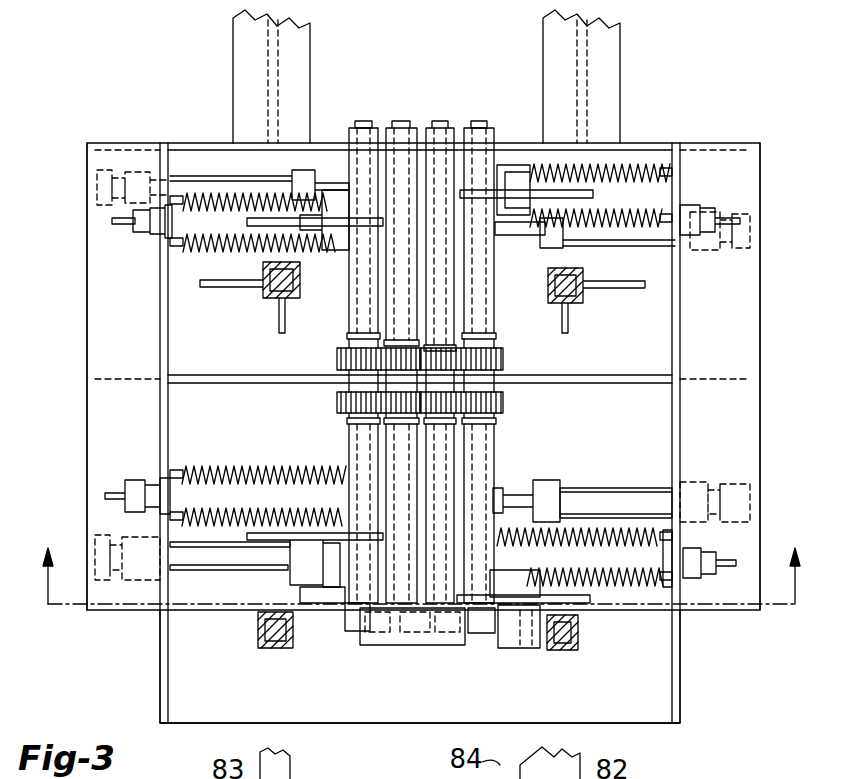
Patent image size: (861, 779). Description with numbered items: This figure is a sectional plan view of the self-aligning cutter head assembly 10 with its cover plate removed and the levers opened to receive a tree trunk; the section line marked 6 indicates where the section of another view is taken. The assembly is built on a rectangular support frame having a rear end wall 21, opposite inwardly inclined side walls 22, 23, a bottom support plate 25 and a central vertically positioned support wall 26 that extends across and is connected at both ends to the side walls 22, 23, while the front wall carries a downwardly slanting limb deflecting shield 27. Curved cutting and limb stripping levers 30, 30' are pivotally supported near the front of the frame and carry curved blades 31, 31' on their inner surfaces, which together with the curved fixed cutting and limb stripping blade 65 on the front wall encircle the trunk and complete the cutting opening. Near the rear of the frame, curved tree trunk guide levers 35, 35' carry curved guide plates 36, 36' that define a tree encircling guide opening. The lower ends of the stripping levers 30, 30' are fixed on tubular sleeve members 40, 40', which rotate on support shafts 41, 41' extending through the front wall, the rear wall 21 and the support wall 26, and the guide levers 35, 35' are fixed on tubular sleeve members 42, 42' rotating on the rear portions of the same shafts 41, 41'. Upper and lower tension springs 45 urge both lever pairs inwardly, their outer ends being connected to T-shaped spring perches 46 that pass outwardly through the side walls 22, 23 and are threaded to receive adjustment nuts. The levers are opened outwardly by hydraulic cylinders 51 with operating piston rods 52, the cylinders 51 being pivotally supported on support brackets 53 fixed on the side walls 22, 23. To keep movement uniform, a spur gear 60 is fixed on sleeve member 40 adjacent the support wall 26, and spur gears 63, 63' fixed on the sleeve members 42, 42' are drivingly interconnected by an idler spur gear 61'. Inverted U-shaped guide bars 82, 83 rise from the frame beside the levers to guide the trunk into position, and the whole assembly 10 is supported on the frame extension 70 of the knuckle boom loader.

The self-aligning cutter head assembly 10 is at (130, 628).
The rear end wall 21 is at (209, 148).
The side wall 22 is at (745, 432).
The side wall 23 is at (100, 410).
The bottom support plate 25 is at (225, 442).
The central vertically positioned support wall 26 is at (648, 376).
The limb deflecting shield 27 is at (400, 710).
The curved cutting and limb stripping lever 30 is at (548, 611).
The curved cutting and limb stripping lever 30' is at (311, 567).
The curved blade 31 is at (522, 646).
The curved blade 31' is at (320, 621).
The curved tree trunk guide lever 35 is at (553, 195).
The curved tree trunk guide lever 35' is at (286, 215).
The curved guide plate 36 is at (514, 164).
The curved guide plate 36' is at (322, 237).
The tubular sleeve member 40 is at (504, 486).
The tubular sleeve member 40' is at (339, 486).
The support shaft 41 is at (474, 381).
The support shaft 41' is at (344, 380).
The tubular sleeve member 42 is at (500, 238).
The tubular sleeve member 42' is at (339, 238).
The tension springs 45 is at (235, 254).
The T-shaped spring perches 46 is at (158, 236).
The hydraulic cylinders 51 is at (235, 190).
The operating piston rods 52 is at (510, 232).
The support brackets 53 is at (97, 185).
The spur gear 60 is at (503, 402).
The idler spur gear 61' is at (350, 401).
The spur gear 63 is at (485, 356).
The spur gear 63' is at (349, 352).
The curved fixed cutting and limb stripping blade 65 is at (425, 643).
The frame extension 70 is at (300, 48).
The inverted U-shaped guide bar 82 is at (583, 303).
The inverted U-shaped guide bar 83 is at (265, 294).
The section line 6- 6 is at (417, 554).